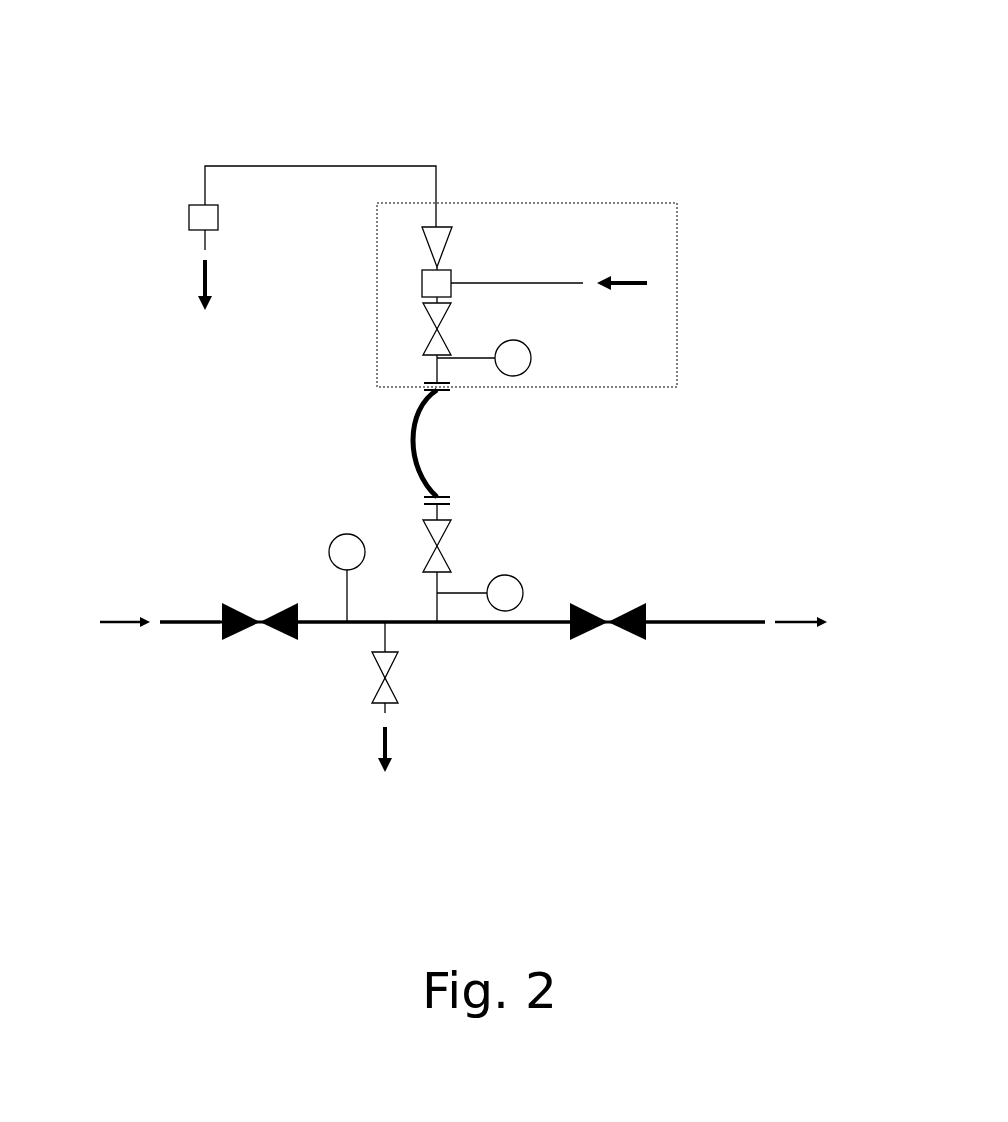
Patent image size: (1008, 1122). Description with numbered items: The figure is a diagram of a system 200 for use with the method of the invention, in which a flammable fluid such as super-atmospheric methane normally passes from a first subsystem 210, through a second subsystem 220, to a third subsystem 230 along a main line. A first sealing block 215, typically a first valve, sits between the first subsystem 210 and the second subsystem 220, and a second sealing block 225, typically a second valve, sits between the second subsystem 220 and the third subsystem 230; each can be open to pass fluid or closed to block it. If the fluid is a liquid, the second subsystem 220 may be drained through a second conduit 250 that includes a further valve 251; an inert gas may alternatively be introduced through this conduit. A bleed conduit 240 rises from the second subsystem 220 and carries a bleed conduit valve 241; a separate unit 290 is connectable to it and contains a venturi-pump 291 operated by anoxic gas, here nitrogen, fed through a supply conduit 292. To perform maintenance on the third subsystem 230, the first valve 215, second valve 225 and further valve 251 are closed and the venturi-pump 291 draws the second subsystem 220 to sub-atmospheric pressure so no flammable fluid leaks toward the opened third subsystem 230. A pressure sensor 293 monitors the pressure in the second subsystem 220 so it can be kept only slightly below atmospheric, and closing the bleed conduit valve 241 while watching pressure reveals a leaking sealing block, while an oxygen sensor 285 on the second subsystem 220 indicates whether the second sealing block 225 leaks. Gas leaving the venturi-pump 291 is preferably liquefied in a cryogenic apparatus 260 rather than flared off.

The system 200 is at (284, 730).
The first subsystem 210 is at (183, 622).
The first sealing block 215 is at (260, 622).
The second subsystem 220 is at (525, 622).
The second sealing block 225 is at (623, 608).
The third subsystem 230 is at (718, 622).
The bleed conduit 240 is at (423, 417).
The bleed conduit valve 241 is at (423, 342).
The second conduit 250 is at (387, 710).
The further valve 251 is at (375, 700).
The cryogenic apparatus 260 is at (187, 218).
The oxygen sensor 285 is at (336, 540).
The separate unit 290 is at (550, 186).
The venturi-pump 291 is at (438, 240).
The supply conduit 292 is at (552, 283).
The pressure sensor 293 is at (515, 358).